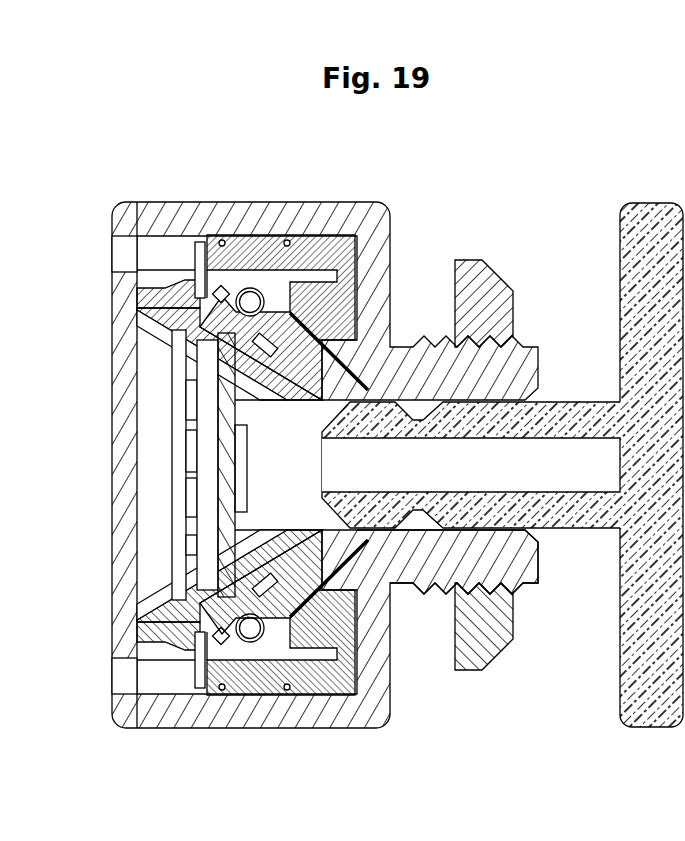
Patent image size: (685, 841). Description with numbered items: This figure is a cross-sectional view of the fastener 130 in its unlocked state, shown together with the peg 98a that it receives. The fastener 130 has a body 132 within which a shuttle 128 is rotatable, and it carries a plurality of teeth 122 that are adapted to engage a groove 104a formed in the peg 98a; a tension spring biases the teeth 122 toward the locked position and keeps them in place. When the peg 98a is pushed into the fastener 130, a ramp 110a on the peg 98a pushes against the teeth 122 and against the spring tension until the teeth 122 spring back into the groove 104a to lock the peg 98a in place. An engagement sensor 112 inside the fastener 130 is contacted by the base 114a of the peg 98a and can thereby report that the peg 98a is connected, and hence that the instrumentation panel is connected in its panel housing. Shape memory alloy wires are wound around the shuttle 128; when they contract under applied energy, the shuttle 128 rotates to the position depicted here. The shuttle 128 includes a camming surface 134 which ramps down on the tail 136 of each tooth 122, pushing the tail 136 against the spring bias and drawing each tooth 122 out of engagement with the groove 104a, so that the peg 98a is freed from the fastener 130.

The fastener 130 is at (500, 170).
The body 132 is at (212, 202).
The shuttle 128 is at (247, 236).
The teeth 122 is at (340, 302).
The groove 104a is at (416, 412).
The peg 98a is at (580, 512).
The engagement sensor 112 is at (240, 490).
The ramp 110a is at (347, 560).
The base 114a is at (280, 650).
The tail 136 is at (307, 607).
The camming surface 134 is at (323, 593).